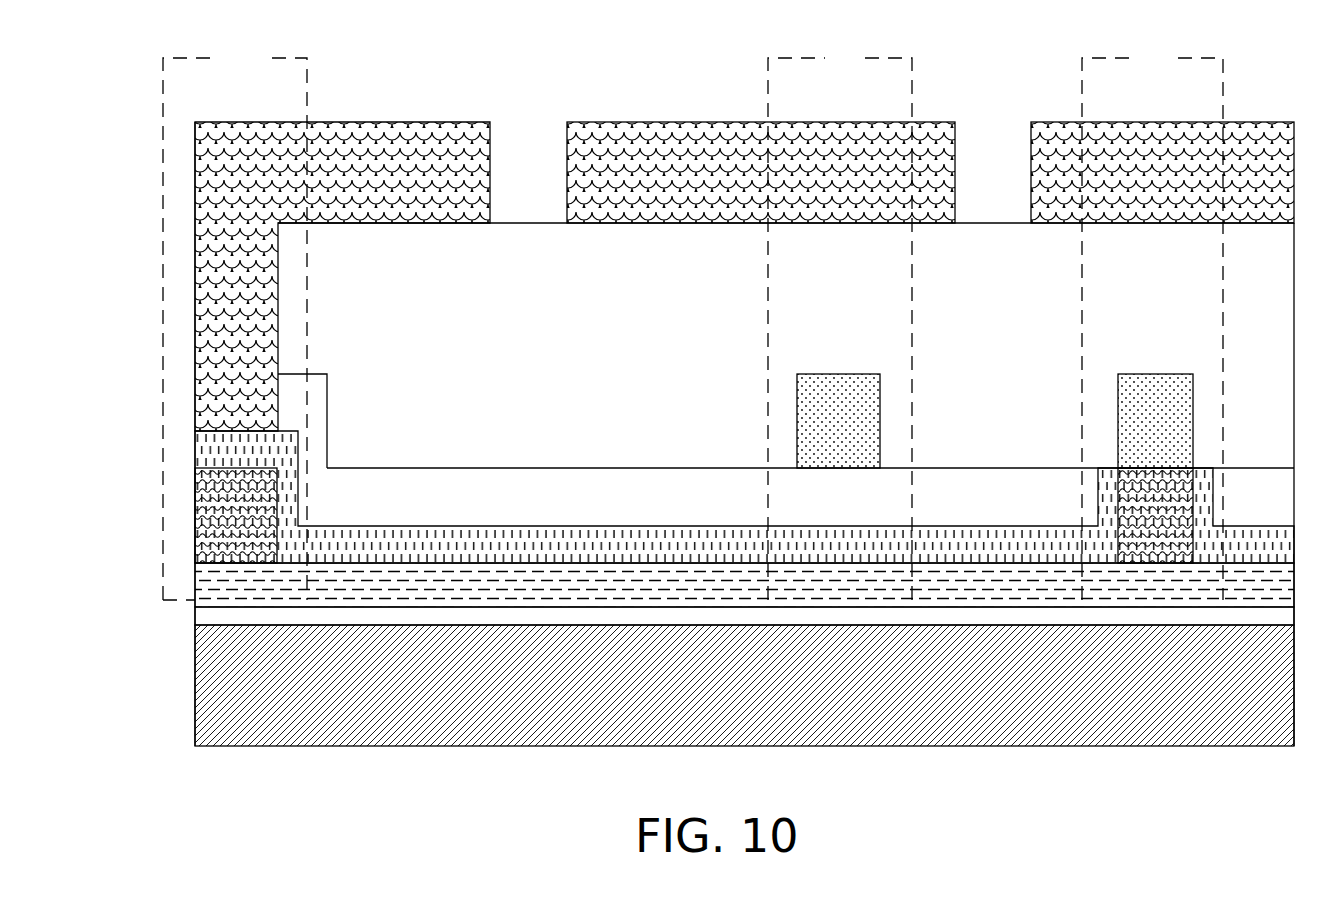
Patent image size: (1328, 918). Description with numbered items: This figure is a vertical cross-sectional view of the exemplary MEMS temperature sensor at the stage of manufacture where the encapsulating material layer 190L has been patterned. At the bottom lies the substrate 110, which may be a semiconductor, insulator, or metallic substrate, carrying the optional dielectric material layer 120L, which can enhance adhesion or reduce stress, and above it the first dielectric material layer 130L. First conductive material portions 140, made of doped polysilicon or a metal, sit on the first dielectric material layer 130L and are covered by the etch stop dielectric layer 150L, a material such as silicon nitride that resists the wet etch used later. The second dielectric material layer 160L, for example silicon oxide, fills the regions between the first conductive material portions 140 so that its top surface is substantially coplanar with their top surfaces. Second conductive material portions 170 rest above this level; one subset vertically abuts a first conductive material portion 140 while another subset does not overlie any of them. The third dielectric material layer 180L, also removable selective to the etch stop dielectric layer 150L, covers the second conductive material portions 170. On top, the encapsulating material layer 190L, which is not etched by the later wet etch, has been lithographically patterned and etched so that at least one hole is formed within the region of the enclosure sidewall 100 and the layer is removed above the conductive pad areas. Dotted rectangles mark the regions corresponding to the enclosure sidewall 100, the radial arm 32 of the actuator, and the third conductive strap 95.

The enclosure sidewall 100 is at (223, 71).
The radial arm 32 is at (832, 71).
The third conductive strap 95 is at (1145, 71).
The substrate 110 is at (705, 682).
The optional dielectric material layer 120L is at (208, 612).
The first dielectric material layer 130L is at (706, 600).
The first conductive material portions 140 is at (217, 541).
The etch stop dielectric layer 150L is at (706, 557).
The second dielectric material layer 160L is at (706, 509).
The second conductive material portions 170 is at (818, 440).
The third dielectric material layer 180L is at (706, 332).
The encapsulating material layer 190L is at (350, 182).